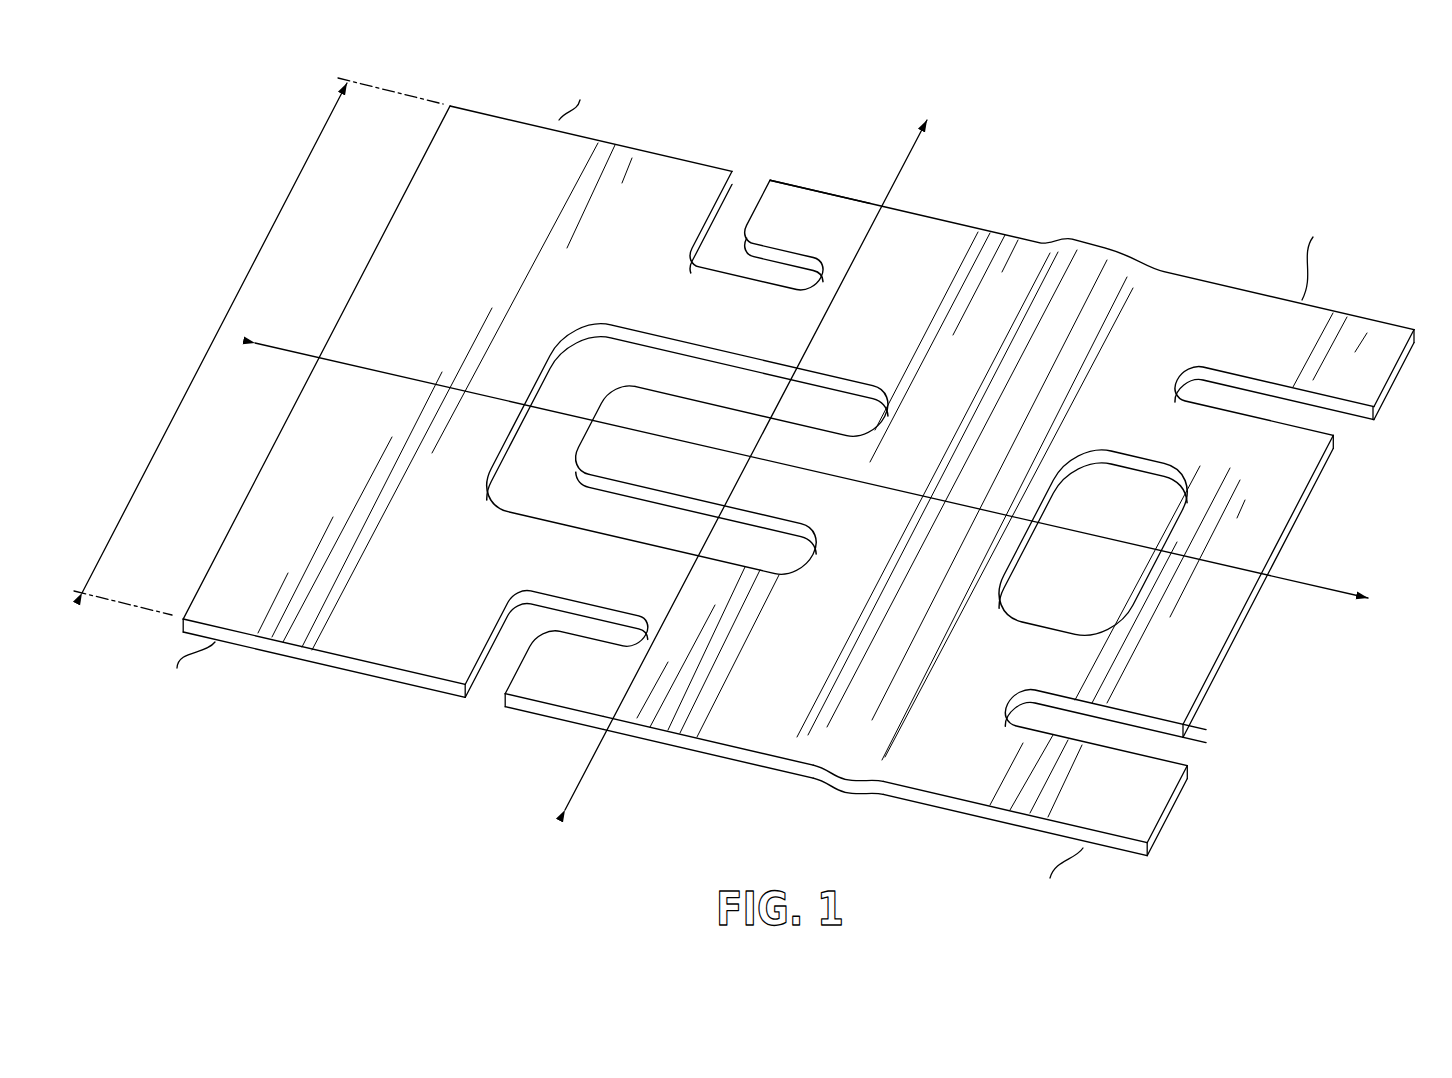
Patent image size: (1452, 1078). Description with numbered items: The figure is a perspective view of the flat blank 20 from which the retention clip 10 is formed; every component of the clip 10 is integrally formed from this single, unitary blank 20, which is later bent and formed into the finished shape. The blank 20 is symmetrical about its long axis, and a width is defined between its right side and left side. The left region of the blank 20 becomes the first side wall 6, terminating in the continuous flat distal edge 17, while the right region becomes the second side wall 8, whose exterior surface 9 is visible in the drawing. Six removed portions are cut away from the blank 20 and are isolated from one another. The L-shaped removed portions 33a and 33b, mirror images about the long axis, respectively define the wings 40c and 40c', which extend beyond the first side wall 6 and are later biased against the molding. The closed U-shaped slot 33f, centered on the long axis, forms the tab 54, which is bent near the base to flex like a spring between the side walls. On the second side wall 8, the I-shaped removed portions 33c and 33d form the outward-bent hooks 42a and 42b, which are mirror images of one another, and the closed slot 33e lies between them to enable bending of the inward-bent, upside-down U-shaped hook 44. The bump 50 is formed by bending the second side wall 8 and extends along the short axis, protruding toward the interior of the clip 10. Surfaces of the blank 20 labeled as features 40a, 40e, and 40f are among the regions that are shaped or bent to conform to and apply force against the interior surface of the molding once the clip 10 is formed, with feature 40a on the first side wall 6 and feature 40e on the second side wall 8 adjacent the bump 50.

The clip 10 is at (753, 469).
The blank 20 is at (753, 469).
The first side wall 6 is at (457, 372).
The second side wall 8 is at (951, 491).
The exterior surface 9 is at (1333, 435).
The distal edge 17 is at (251, 483).
The removed portion 33a is at (728, 242).
The removed portion 33b is at (500, 660).
The removed portion 33c is at (1182, 388).
The removed portion 33d is at (1114, 733).
The removed portion 33e is at (1133, 513).
The removed portion 33f is at (574, 417).
The feature 40a is at (437, 243).
The wing 40c is at (822, 163).
The opposing wing 40c' is at (536, 740).
The feature 40e is at (755, 731).
The feature 40f is at (912, 765).
The hook 42a is at (1337, 338).
The hook 42b is at (1122, 818).
The hook 44 is at (1183, 670).
The bump 50 is at (862, 743).
The tab 54 is at (592, 462).